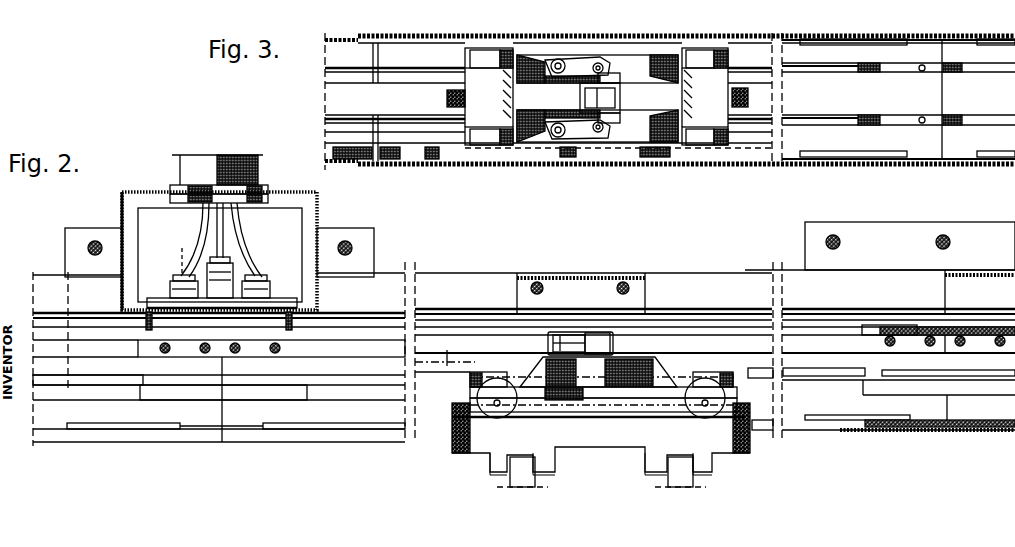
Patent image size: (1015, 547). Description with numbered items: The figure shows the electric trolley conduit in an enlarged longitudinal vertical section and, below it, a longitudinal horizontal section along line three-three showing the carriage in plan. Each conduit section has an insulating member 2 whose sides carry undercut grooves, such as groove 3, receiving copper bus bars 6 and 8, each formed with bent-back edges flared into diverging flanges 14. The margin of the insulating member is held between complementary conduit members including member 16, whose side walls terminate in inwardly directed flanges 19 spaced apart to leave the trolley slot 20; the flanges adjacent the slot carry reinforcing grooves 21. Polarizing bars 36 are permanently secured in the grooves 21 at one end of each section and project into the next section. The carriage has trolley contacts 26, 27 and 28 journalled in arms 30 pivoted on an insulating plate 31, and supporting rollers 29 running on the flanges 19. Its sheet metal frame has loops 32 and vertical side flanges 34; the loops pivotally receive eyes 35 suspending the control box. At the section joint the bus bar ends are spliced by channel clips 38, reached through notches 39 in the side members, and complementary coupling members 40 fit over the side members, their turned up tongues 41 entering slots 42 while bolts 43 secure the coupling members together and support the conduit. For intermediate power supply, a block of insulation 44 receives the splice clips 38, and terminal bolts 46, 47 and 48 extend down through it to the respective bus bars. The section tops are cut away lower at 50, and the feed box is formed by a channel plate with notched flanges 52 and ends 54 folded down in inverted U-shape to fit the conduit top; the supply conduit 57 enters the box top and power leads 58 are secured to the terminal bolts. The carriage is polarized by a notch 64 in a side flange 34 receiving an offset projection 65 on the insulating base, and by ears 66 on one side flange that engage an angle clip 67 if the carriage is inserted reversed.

In FIG. 2, the insulating member 2 is at (622, 318).
In FIG. 2, the undercut groove 3 is at (445, 350).
In FIG. 2, the bus bar 6 is at (200, 236).
In FIG. 2, the bus bar 8 is at (322, 388).
In FIG. 2, the diverging flanges 14 is at (104, 377).
In FIG. 2, the conduit member 16 is at (432, 318).
In FIG. 3, the inwardly directed flanges 19 is at (353, 58).
In FIG. 3, the trolley slot 20 is at (618, 100).
In FIG. 3, the reinforcing grooves 21 is at (808, 72).
In FIG. 3, the trolley contact 26 is at (612, 67).
In FIG. 2, the trolley contact 26 is at (600, 338).
In FIG. 3, the trolley contact 27 is at (606, 132).
In FIG. 3, the trolley contact 28 is at (615, 99).
In FIG. 3, the supporting rollers 29 is at (483, 56).
In FIG. 2, the supporting rollers 29 is at (505, 420).
In FIG. 3, the arms 30 is at (583, 62).
In FIG. 2, the arms 30 is at (585, 331).
In FIG. 3, the insulating plate 31 is at (482, 93).
In FIG. 2, the insulating plate 31 is at (648, 388).
In FIG. 2, the loops 32 is at (497, 458).
In FIG. 2, the side flanges 34 is at (650, 402).
In FIG. 3, the eyes 35 is at (660, 82).
In FIG. 2, the eyes 35 is at (523, 478).
In FIG. 3, the bars 36 is at (963, 70).
In FIG. 2, the bars 36 is at (980, 433).
In FIG. 2, the channel clips 38 is at (255, 358).
In FIG. 2, the notches 39 is at (868, 326).
In FIG. 2, the coupling members 40 is at (363, 255).
In FIG. 3, the turned up tongues 41 is at (863, 42).
In FIG. 2, the turned up tongues 41 is at (110, 430).
In FIG. 3, the slots 42 is at (832, 44).
In FIG. 2, the slots 42 is at (182, 430).
In FIG. 2, the bolts 43 is at (352, 243).
In FIG. 2, the block of insulation 44 is at (147, 303).
In FIG. 2, the terminal bolt 46 is at (182, 280).
In FIG. 2, the terminal 47 is at (260, 280).
In FIG. 2, the terminal bolt 48 is at (225, 262).
In FIG. 2, the cut away tops 50 is at (140, 396).
In FIG. 2, the flanges 52 is at (135, 222).
In FIG. 2, the channel ends 54 is at (121, 240).
In FIG. 2, the supply conduit 57 is at (208, 167).
In FIG. 2, the power leads 58 is at (205, 233).
In FIG. 2, the notch 64 is at (562, 396).
In FIG. 2, the projection 65 is at (583, 392).
In FIG. 3, the ear 66 is at (493, 50).
In FIG. 2, the ear 66 is at (492, 386).
In FIG. 2, the angle clip 67 is at (515, 380).